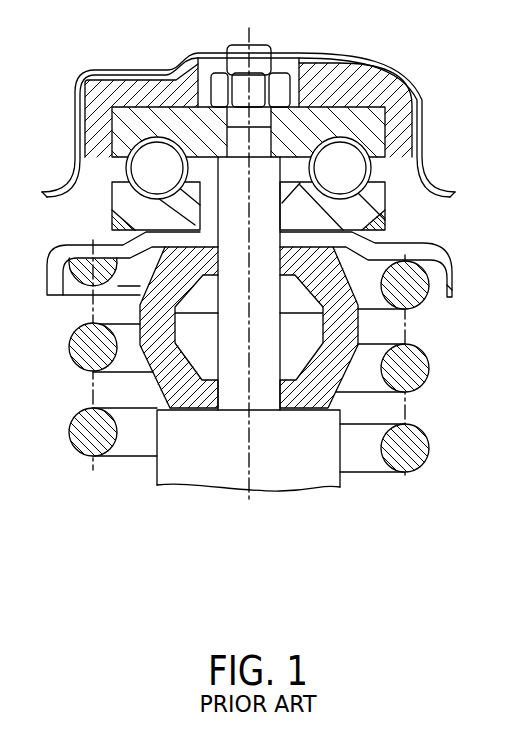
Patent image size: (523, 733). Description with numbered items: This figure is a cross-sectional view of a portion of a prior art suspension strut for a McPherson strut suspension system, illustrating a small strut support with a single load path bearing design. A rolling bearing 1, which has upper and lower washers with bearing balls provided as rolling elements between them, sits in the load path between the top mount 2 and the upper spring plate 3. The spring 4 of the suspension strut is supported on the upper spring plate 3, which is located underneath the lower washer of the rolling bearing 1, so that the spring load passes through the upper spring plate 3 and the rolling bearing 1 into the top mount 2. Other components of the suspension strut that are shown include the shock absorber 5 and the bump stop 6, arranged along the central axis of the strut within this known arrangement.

The rolling bearing 1 is at (120, 130).
The top mount 2 is at (388, 92).
The upper spring plate 3 is at (453, 262).
The spring 4 is at (430, 445).
The shock absorber 5 is at (263, 397).
The bump stop 6 is at (163, 347).